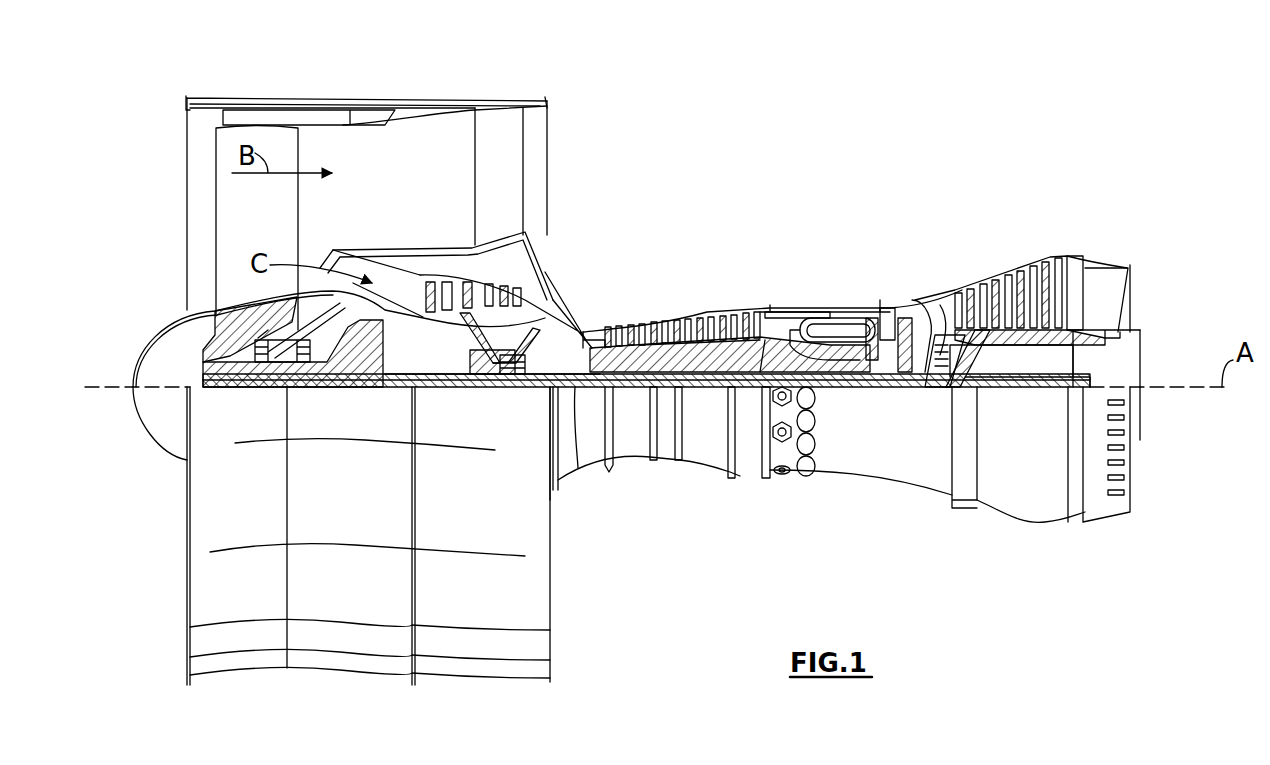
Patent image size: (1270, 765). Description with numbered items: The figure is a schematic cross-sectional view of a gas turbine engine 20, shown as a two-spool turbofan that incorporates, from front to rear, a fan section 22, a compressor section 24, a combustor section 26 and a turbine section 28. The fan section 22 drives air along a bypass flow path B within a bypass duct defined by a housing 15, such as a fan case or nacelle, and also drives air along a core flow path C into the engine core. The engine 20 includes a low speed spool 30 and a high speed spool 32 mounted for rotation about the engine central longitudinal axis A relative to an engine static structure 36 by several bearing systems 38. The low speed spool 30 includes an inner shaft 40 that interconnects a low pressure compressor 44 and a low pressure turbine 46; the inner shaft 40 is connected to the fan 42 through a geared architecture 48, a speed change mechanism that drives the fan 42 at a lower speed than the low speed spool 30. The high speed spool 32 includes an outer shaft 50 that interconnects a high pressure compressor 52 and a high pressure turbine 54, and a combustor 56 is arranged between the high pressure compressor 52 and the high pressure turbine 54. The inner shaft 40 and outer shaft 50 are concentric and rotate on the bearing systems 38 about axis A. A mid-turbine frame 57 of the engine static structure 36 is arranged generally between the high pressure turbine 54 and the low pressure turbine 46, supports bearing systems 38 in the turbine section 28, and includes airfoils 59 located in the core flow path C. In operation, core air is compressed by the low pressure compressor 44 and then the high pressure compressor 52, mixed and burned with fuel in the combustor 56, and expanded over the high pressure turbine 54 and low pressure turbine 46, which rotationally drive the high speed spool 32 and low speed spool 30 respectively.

The housing 15 is at (370, 109).
The gas turbine engine 20 is at (830, 153).
The fan section 22 is at (296, 97).
The compressor section 24 is at (598, 292).
The combustor section 26 is at (854, 297).
The turbine section 28 is at (1027, 287).
The low speed spool 30 is at (707, 395).
The high speed spool 32 is at (748, 345).
The engine static structure 36 is at (748, 472).
The bearing systems 38 is at (513, 363).
The inner shaft 40 is at (578, 468).
The fan 42 is at (257, 228).
The low pressure compressor 44 is at (468, 298).
The low pressure turbine 46 is at (1018, 270).
The geared architecture 48 is at (377, 368).
The outer shaft 50 is at (836, 378).
The high pressure compressor 52 is at (676, 355).
The high pressure turbine 54 is at (895, 306).
The combustor 56 is at (825, 335).
The mid-turbine frame 57 is at (932, 300).
The airfoils 59 is at (968, 355).